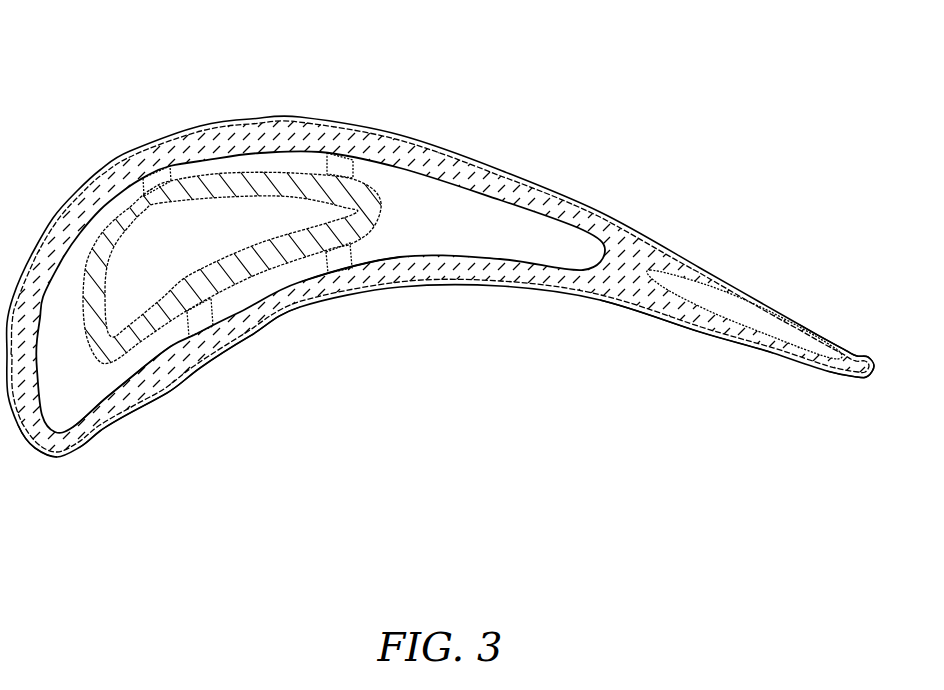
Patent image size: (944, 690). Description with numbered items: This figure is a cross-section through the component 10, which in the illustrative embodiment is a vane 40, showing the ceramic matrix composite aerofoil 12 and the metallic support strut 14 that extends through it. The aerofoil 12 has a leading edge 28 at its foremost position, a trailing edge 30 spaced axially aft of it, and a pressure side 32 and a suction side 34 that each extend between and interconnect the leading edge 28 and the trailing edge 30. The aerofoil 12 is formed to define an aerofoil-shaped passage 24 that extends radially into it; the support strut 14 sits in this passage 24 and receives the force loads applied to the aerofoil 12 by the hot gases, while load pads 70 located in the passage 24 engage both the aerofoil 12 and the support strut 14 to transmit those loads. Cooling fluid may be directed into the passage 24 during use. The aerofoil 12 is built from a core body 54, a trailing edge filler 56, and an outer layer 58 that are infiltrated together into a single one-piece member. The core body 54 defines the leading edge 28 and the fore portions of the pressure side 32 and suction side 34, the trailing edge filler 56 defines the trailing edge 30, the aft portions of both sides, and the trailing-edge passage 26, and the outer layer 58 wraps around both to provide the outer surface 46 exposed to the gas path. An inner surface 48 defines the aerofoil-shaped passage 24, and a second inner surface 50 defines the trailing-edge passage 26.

The component 10 is at (786, 96).
The ceramic matrix composite aerofoil 12 is at (105, 156).
The metallic support strut 14 is at (246, 166).
The passage 24 is at (462, 222).
The trailing-edge passage 26 is at (767, 322).
The leading edge 28 is at (47, 468).
The trailing edge 30 is at (884, 382).
The pressure side 32 is at (279, 330).
The suction side 34 is at (363, 120).
The vane 40 is at (152, 558).
The outer surface 46 is at (146, 415).
The inner surface 48 is at (103, 399).
The inner surface 50 is at (704, 297).
The core body 54 is at (467, 268).
The trailing edge filler 56 is at (686, 312).
The outer layer 58 is at (597, 308).
The load pads 70 is at (187, 327).